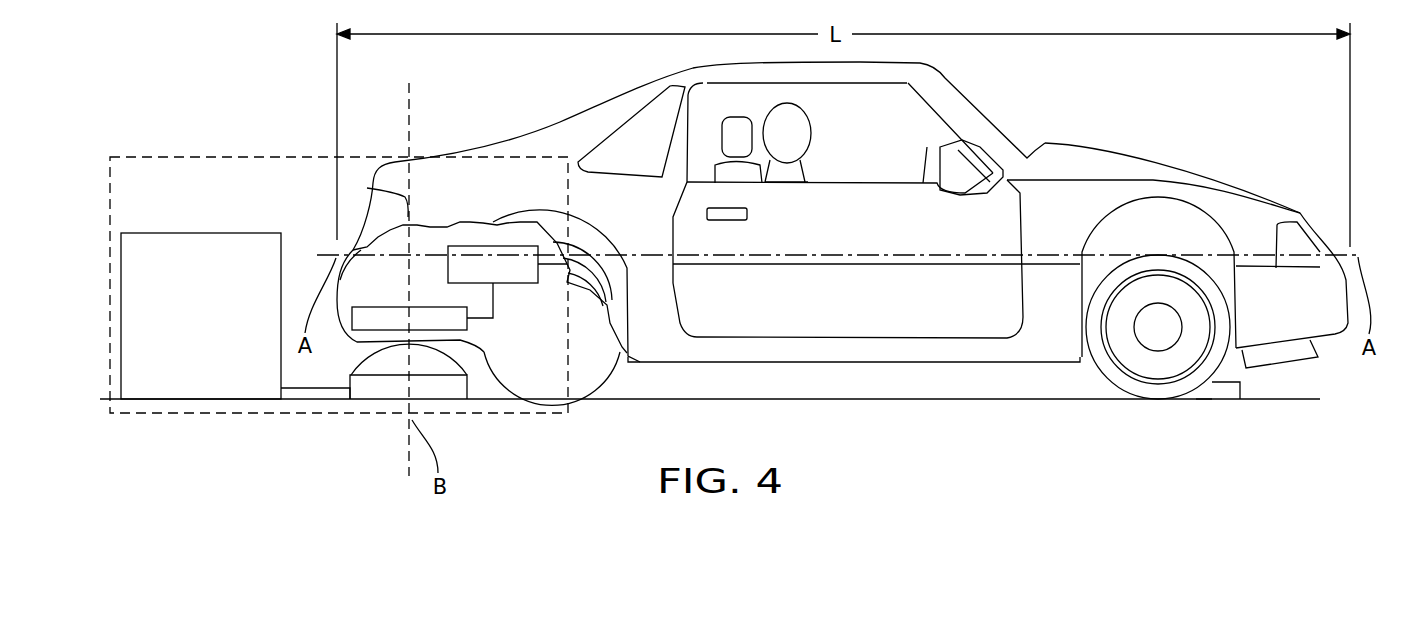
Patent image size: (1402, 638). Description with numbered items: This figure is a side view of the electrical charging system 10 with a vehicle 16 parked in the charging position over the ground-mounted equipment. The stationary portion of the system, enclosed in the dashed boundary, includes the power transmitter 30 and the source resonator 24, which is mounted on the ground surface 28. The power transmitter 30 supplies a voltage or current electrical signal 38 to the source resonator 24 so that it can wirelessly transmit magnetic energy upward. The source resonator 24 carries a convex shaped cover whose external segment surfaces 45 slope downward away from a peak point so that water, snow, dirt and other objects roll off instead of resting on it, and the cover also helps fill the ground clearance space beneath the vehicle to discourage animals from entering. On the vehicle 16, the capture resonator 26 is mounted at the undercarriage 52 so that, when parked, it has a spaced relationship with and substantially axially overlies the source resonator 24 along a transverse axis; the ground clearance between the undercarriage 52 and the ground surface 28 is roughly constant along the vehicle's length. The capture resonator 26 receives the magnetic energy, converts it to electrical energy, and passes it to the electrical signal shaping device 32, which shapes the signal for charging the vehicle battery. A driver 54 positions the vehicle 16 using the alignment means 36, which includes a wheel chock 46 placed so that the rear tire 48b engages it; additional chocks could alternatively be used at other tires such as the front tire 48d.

The electrical charging system 10 is at (273, 158).
The vehicle 16 is at (1113, 153).
The source resonator 24 is at (378, 394).
The capture resonator 26 is at (400, 313).
The ground surface 28 is at (938, 390).
The power transmitter 30 is at (207, 392).
The electrical signal shaping device 32 is at (483, 246).
The alignment means 36 is at (1242, 390).
The electrical signal 38 is at (308, 392).
The external segment surfaces 45 is at (439, 367).
The wheel chock 46 is at (1210, 393).
The tire 48b is at (1108, 378).
The tire 48d is at (596, 276).
The undercarriage 52 is at (812, 363).
The driver 54 is at (808, 110).